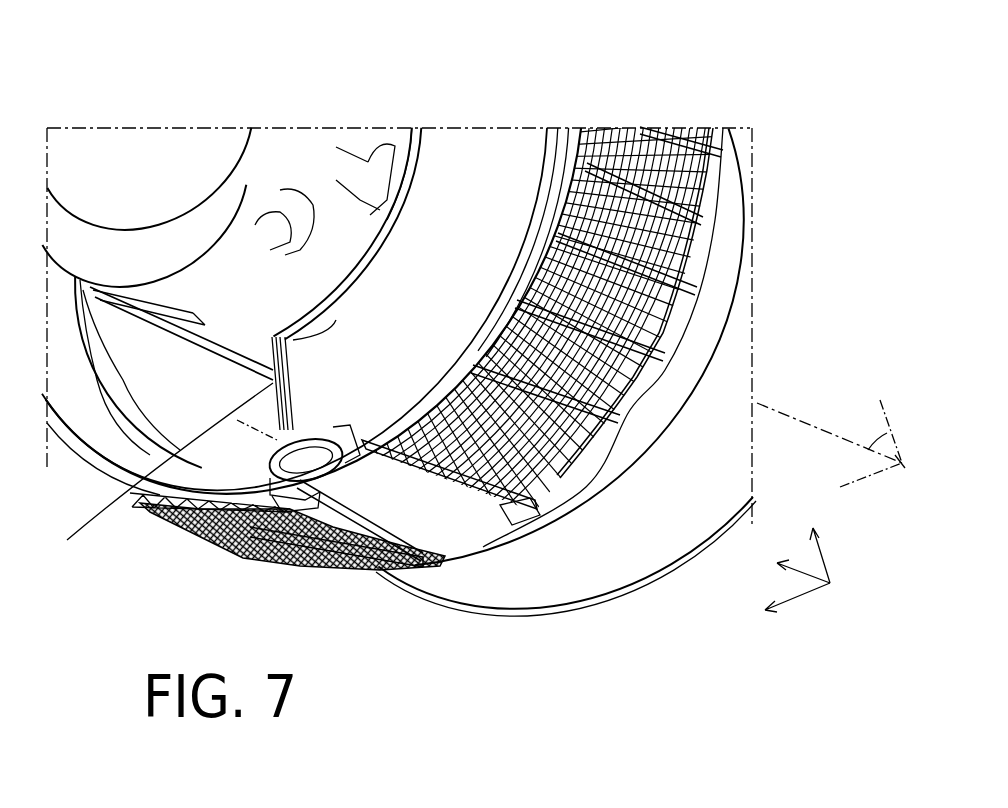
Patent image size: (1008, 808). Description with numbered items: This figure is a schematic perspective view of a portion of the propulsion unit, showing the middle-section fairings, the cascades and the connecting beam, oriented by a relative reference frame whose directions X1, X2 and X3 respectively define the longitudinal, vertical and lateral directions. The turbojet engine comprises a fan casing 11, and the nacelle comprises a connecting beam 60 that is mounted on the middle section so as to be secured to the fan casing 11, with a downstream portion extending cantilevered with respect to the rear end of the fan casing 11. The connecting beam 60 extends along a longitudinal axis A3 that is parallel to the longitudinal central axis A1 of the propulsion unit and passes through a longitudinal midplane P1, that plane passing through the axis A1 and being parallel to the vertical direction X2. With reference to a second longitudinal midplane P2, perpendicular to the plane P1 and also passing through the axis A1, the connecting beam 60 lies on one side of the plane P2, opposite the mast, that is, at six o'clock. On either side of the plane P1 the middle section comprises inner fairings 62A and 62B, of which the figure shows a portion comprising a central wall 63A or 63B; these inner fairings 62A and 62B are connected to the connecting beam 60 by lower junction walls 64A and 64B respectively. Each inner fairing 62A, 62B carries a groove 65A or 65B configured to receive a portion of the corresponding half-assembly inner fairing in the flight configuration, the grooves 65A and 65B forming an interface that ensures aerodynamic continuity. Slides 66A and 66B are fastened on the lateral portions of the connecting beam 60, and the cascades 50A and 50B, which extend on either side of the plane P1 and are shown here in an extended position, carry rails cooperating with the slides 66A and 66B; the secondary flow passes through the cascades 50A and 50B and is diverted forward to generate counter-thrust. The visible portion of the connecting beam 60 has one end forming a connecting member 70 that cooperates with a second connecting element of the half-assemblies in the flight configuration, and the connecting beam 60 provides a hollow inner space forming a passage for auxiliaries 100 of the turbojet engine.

The fan casing 11 is at (572, 584).
The cascade 50A is at (180, 530).
The cascade 50B is at (650, 132).
The connecting beam 60 is at (277, 490).
The inner fairing 62A is at (145, 461).
The inner fairing 62B is at (319, 256).
The central wall 63A is at (112, 440).
The central wall 63B is at (469, 133).
The lower junction wall 64A is at (165, 430).
The lower junction wall 64B is at (451, 272).
The groove 65A is at (163, 350).
The groove 65B is at (423, 137).
The slide 66A is at (403, 550).
The slide 66B is at (470, 520).
The connecting member 70 is at (293, 480).
The auxiliaries 100 is at (250, 340).
The longitudinal central axis A1 is at (770, 407).
The longitudinal axis A3 is at (238, 425).
The longitudinal midplane P1 is at (887, 440).
The longitudinal midplane P2 is at (880, 454).
The longitudinal direction X1 is at (783, 566).
The vertical direction X2 is at (838, 551).
The lateral direction X3 is at (796, 611).